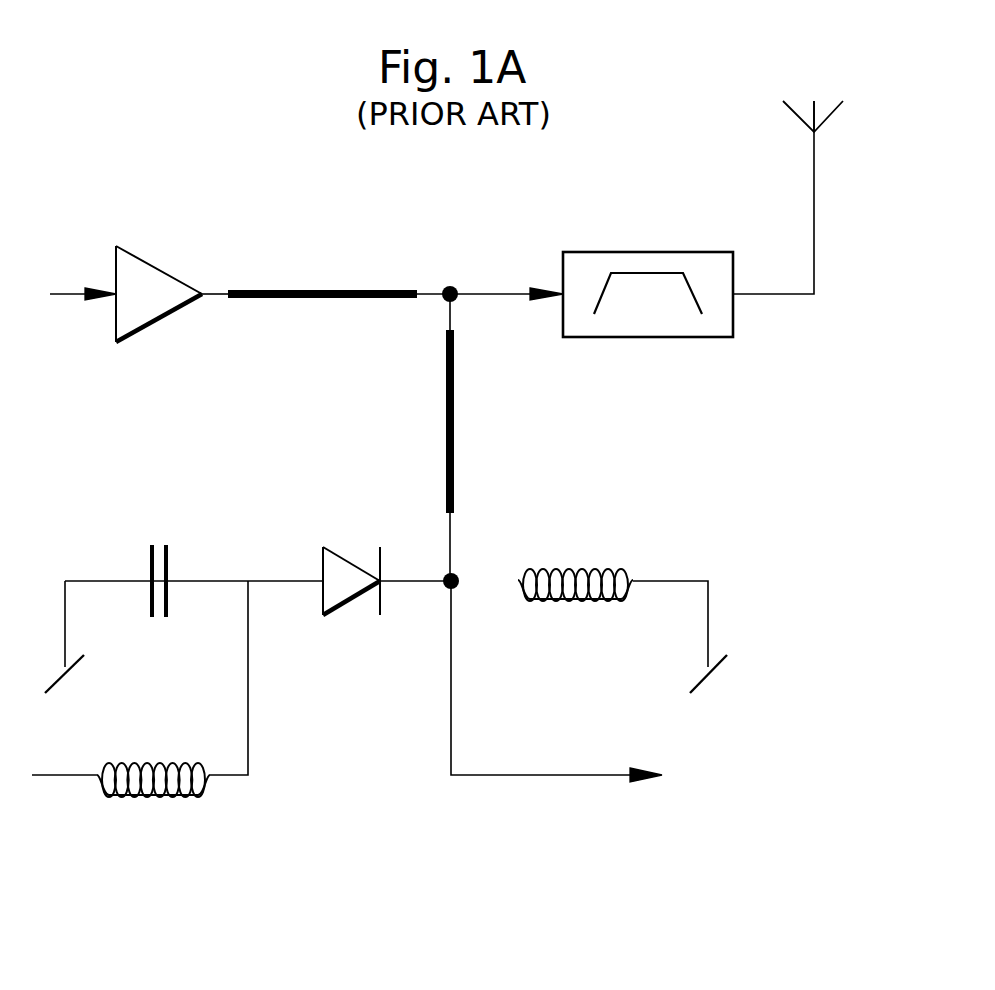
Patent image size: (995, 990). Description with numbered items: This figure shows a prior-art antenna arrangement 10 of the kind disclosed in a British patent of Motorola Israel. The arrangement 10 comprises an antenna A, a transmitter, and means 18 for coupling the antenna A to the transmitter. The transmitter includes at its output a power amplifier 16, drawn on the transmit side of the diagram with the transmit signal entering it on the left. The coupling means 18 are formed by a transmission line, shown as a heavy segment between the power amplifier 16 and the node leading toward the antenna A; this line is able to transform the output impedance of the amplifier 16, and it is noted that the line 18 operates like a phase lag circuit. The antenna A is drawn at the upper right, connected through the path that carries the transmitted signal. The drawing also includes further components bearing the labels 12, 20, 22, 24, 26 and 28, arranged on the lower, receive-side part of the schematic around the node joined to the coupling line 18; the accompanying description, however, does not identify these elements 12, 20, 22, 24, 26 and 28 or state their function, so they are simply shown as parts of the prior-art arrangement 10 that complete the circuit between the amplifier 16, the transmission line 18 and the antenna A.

The antenna arrangement 10 is at (184, 136).
The receiver protection / switching circuit 12 is at (107, 486).
The power amplifier 16 is at (153, 287).
The coupling means 18 is at (322, 290).
The quarter-wave transmission line 20 is at (455, 420).
The diode 22 is at (345, 573).
The inductor 24 is at (155, 797).
The inductor 26 is at (577, 602).
The capacitor 28 is at (138, 578).
The antenna A is at (814, 195).